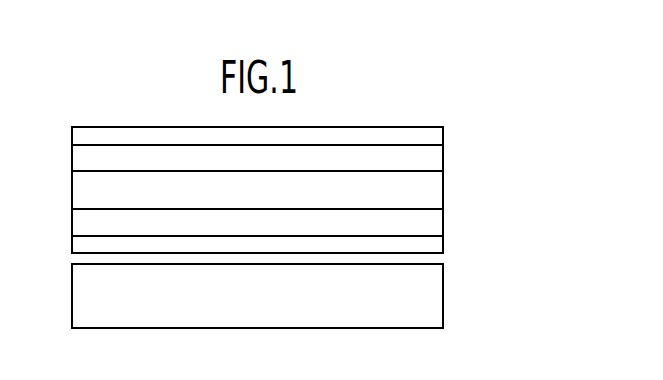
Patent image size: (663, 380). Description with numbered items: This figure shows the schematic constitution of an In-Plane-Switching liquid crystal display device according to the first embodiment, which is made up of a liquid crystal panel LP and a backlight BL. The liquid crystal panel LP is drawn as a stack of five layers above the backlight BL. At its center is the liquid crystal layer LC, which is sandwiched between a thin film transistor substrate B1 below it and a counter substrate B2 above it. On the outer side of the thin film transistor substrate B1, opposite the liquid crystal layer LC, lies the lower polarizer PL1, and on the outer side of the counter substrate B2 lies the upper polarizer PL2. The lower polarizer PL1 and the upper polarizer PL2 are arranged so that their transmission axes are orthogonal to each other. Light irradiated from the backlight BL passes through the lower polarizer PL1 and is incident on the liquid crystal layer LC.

The upper polarizer PL2 is at (433, 137).
The counter substrate B2 is at (433, 163).
The liquid crystal layer LC is at (433, 191).
The thin film transistor substrate B1 is at (433, 224).
The lower polarizer PL1 is at (433, 245).
The liquid crystal panel LP is at (519, 110).
The backlight BL is at (433, 297).